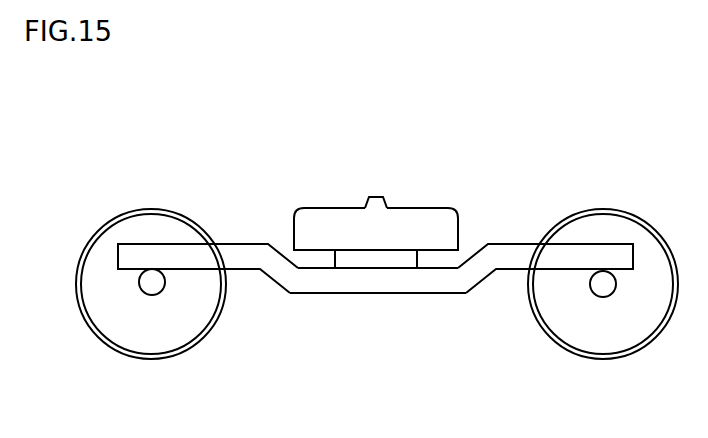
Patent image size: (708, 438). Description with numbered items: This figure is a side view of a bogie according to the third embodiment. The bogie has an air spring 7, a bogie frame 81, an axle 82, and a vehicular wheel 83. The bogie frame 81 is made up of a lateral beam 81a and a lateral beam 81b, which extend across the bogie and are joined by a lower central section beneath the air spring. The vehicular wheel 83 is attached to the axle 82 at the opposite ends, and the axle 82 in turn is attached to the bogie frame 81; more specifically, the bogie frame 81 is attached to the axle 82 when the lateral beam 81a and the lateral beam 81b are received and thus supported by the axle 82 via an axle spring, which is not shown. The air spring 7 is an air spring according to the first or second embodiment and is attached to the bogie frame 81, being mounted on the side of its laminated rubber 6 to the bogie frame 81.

The laminated rubber 6 is at (352, 258).
The air spring 7 is at (413, 188).
The bogie frame 81 is at (375, 328).
The lateral beam 81a is at (257, 262).
The lateral beam 81b is at (545, 301).
The axle 82 is at (153, 295).
The vehicular wheel 83 is at (199, 311).